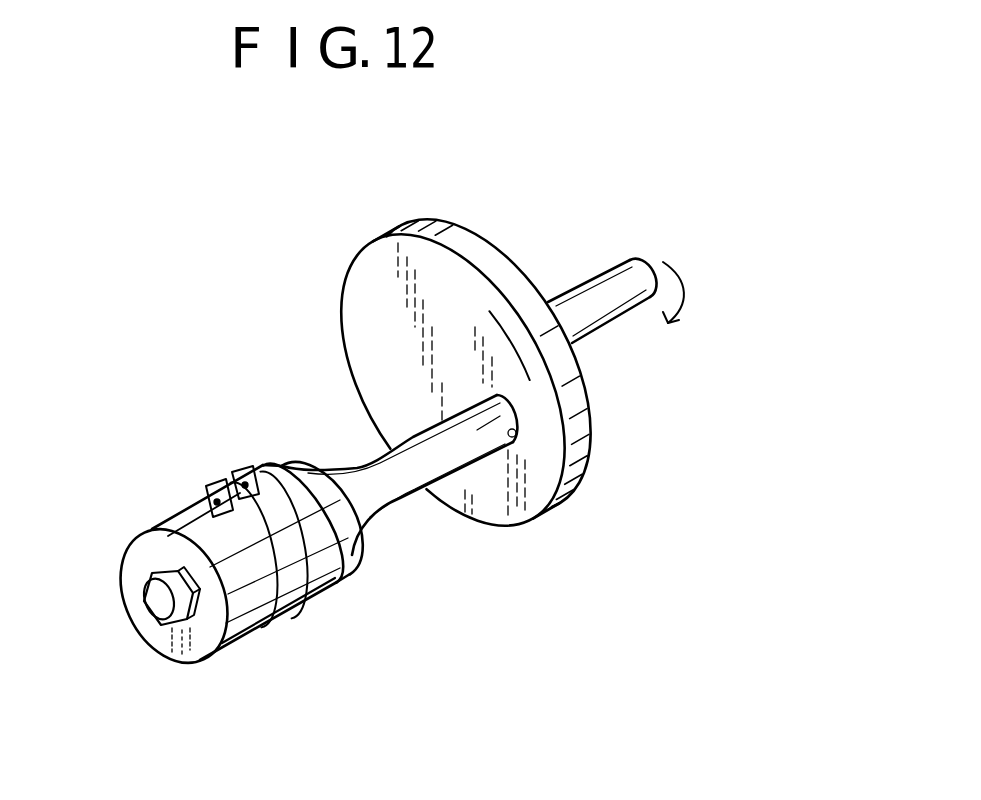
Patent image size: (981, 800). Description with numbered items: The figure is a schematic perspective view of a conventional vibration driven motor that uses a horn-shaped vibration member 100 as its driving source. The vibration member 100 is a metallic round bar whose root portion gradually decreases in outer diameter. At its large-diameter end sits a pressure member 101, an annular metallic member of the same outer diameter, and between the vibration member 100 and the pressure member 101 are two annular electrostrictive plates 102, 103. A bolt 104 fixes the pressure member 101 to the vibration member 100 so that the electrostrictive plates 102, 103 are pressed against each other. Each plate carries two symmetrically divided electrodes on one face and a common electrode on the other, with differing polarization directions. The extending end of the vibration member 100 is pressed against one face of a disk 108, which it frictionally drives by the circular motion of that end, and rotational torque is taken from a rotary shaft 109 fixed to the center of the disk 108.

The vibration member 100 is at (342, 460).
The pressure member 101 is at (186, 512).
The electrostrictive plate 102 is at (303, 612).
The electrostrictive plate 103 is at (273, 606).
The bolt 104 is at (163, 596).
The disk 108 is at (503, 519).
The rotary shaft 109 is at (610, 278).